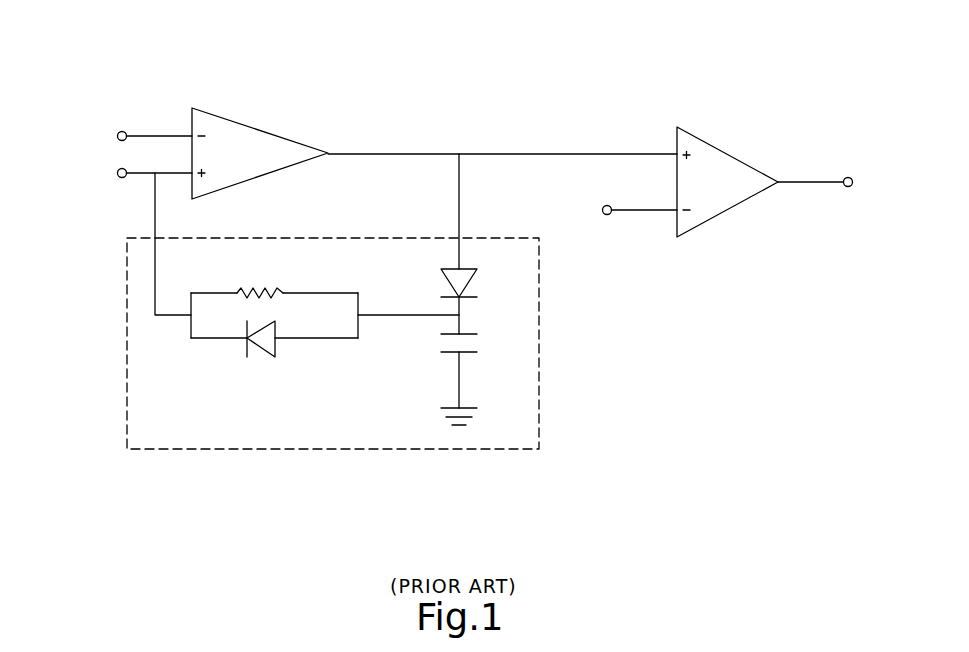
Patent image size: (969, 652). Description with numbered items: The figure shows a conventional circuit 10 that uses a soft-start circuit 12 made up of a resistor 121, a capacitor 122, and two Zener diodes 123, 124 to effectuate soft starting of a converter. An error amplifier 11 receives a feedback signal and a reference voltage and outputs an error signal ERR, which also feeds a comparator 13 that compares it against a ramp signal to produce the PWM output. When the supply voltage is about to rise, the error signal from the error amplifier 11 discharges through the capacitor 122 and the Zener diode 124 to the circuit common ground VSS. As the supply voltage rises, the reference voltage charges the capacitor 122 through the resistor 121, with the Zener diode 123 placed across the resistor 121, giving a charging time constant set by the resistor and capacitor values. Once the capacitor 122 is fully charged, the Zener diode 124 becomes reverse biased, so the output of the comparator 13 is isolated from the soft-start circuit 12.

The circuit 10 is at (683, 43).
The error amplifier 11 is at (277, 121).
The soft-start circuit 12 is at (557, 322).
The comparator 13 is at (733, 125).
The resistor 121 is at (298, 290).
The capacitor 122 is at (427, 348).
The Zener diode 123 is at (225, 362).
The Zener diode 124 is at (431, 288).